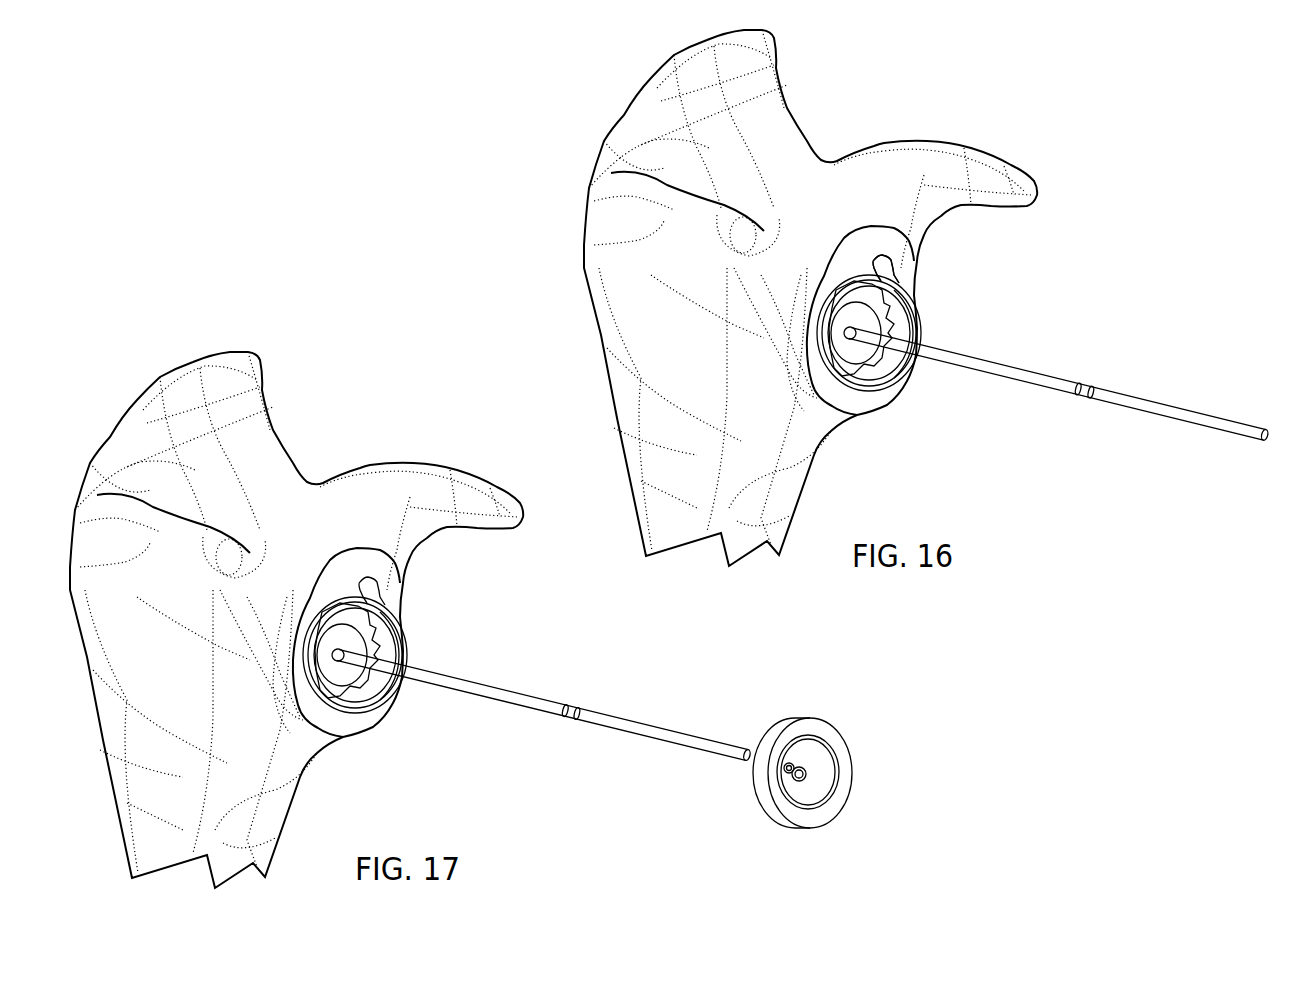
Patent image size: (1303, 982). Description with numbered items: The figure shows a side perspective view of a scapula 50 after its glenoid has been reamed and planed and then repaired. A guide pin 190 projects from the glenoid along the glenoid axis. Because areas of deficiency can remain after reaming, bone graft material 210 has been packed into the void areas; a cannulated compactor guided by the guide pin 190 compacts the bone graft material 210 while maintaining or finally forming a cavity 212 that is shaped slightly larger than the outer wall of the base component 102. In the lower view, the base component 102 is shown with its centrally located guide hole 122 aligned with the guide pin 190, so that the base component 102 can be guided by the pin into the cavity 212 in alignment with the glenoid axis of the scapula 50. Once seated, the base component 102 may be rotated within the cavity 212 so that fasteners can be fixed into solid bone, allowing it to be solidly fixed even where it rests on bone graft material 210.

In FIG. 17, the scapula 50 is at (178, 372).
In FIG. 16, the scapula 50 is at (610, 140).
In FIG. 17, the guide pin 190 is at (673, 735).
In FIG. 16, the guide pin 190 is at (1207, 415).
In FIG. 16, the bone graft material 210 is at (893, 275).
In FIG. 17, the cavity 212 is at (367, 713).
In FIG. 16, the cavity 212 is at (890, 392).
In FIG. 17, the base component 102 is at (810, 750).
In FIG. 17, the guide hole 122 is at (792, 800).